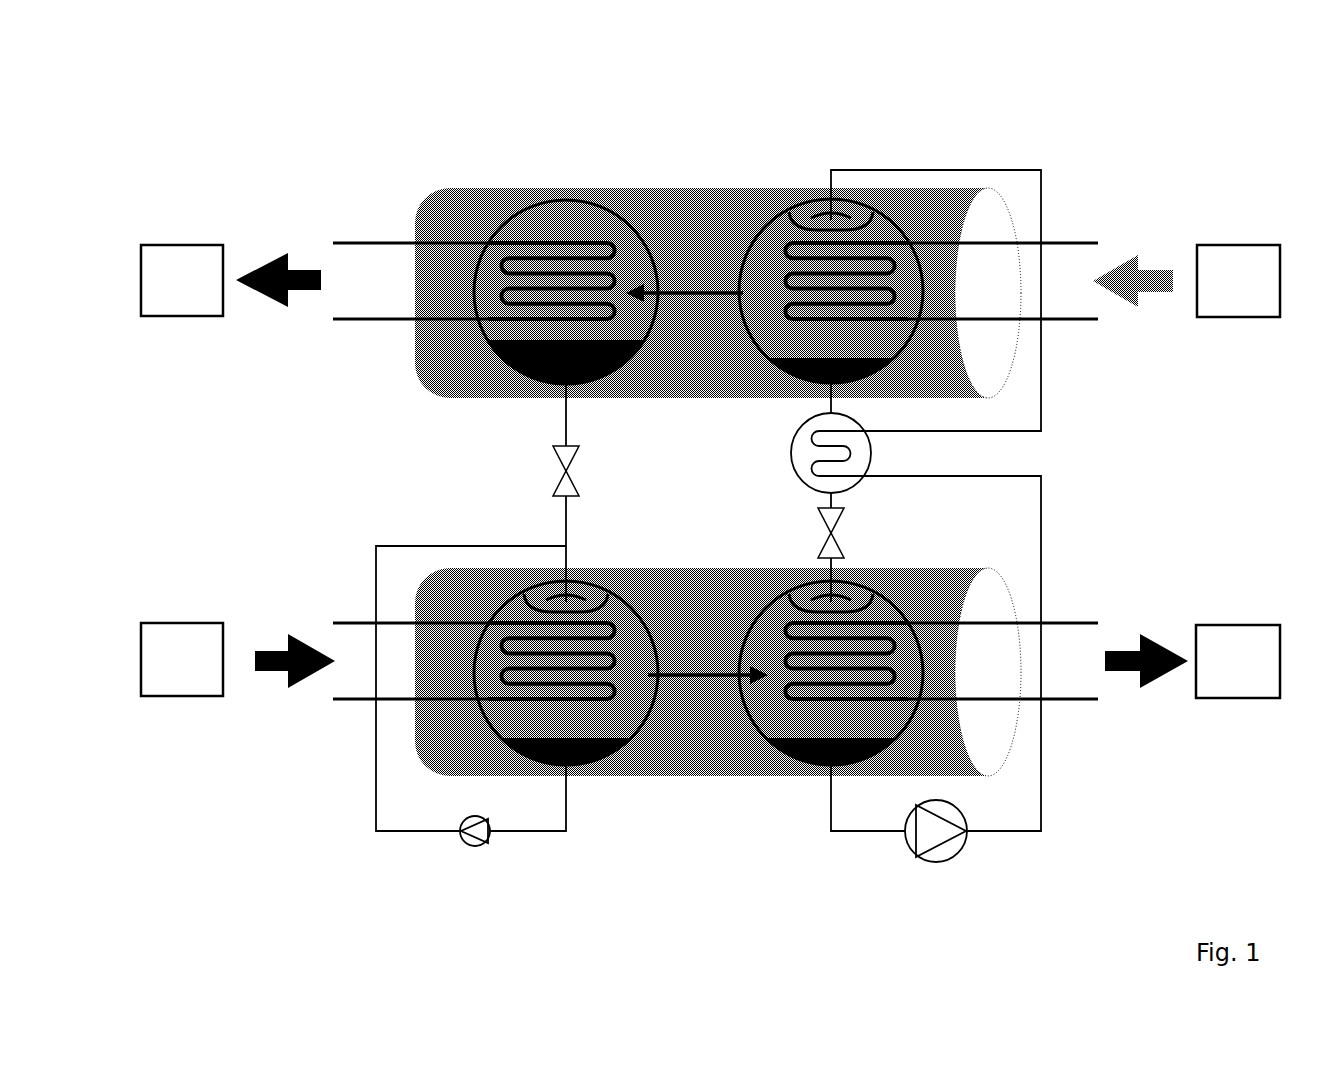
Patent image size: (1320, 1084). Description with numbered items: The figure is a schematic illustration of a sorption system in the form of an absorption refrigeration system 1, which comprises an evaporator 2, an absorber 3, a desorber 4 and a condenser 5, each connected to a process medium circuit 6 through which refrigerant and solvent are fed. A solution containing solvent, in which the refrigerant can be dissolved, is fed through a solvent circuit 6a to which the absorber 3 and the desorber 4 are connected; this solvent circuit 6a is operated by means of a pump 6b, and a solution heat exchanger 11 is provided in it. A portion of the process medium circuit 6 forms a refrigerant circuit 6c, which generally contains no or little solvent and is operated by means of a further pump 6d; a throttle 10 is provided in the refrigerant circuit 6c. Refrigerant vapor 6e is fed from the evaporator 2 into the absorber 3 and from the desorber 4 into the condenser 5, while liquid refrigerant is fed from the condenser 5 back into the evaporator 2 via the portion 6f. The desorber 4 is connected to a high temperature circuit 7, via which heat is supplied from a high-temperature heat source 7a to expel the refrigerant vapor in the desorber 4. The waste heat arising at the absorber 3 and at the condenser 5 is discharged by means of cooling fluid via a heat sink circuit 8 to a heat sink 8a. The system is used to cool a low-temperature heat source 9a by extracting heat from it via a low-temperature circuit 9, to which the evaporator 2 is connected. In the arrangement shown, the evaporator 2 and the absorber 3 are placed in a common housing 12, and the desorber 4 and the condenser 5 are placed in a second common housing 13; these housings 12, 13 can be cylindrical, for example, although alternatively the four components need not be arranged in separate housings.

The absorption refrigeration system 1 is at (228, 110).
The evaporator 2 is at (625, 712).
The absorber 3 is at (763, 705).
The desorber 4 is at (797, 210).
The condenser 5 is at (542, 220).
The process medium circuit 6 is at (758, 541).
The solvent circuit 6a is at (1033, 767).
The pump 6b is at (937, 857).
The refrigerant circuit 6c is at (413, 537).
The pump 6d is at (470, 838).
The refrigerant vapor 6e is at (688, 284).
The portion 6f is at (555, 518).
The high temperature circuit 7 is at (1065, 235).
The high-temperature heat source 7a is at (1186, 281).
The heat sink circuit 8 is at (390, 311).
The heat sink 8a is at (710, 471).
The low-temperature circuit 9 is at (338, 615).
The low-temperature heat source 9a is at (238, 659).
The throttle 10 is at (565, 452).
The solution heat exchanger 11 is at (783, 450).
The common housing 12 is at (737, 562).
The common housing 13 is at (625, 183).